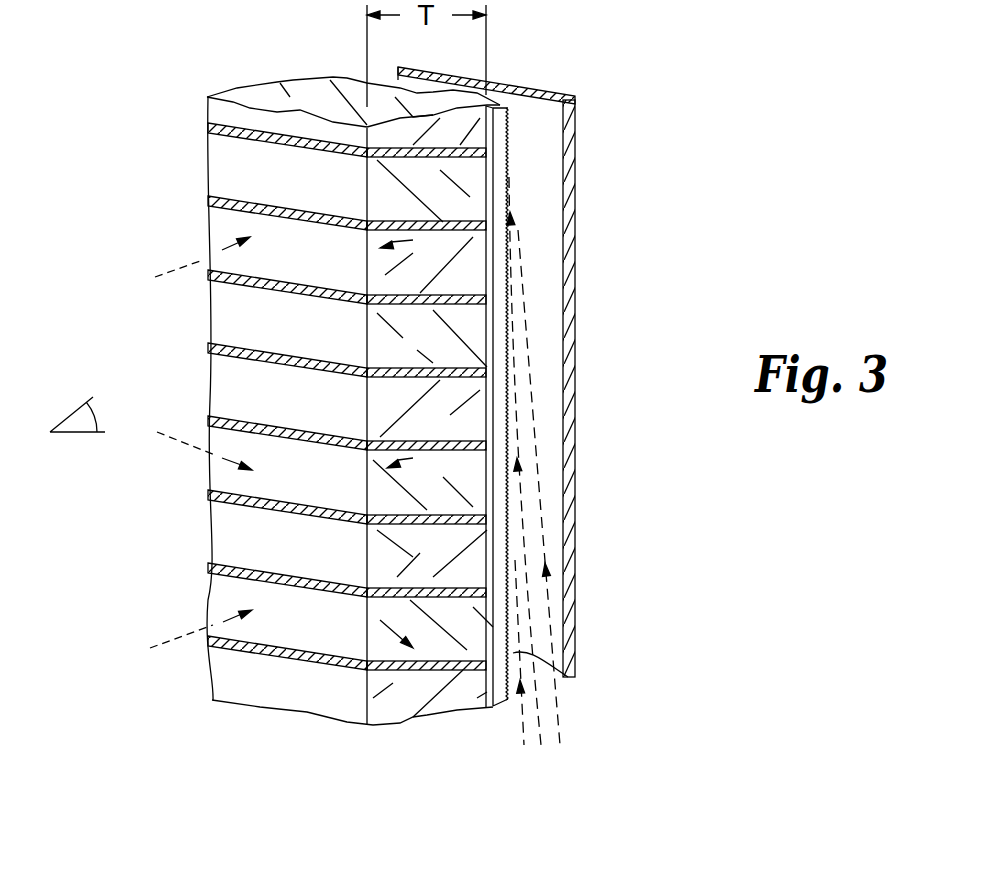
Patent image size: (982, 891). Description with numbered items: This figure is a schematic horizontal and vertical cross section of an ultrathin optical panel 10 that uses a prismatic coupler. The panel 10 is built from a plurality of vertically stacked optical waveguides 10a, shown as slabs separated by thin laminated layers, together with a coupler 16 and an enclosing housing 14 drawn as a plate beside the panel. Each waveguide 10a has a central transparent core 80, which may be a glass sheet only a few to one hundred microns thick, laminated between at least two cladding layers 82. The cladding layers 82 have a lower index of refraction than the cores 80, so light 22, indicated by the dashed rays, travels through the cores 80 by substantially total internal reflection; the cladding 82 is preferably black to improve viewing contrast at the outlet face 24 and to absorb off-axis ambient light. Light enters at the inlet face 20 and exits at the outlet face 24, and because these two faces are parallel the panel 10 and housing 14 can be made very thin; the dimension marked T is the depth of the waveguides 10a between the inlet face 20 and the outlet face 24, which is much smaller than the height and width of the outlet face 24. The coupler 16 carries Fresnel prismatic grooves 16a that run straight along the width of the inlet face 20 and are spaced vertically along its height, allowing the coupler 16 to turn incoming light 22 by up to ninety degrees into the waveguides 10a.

The optical panel 10 is at (170, 149).
The optical waveguides 10a is at (490, 565).
The housing 14 is at (570, 447).
The coupler 16 is at (520, 155).
The Fresnel prismatic grooves 16a is at (478, 320).
The inlet face 20 is at (495, 404).
The light 22 is at (555, 708).
The outlet face 24 is at (242, 315).
The central transparent core 80 is at (217, 530).
The cladding layers 82 is at (213, 492).